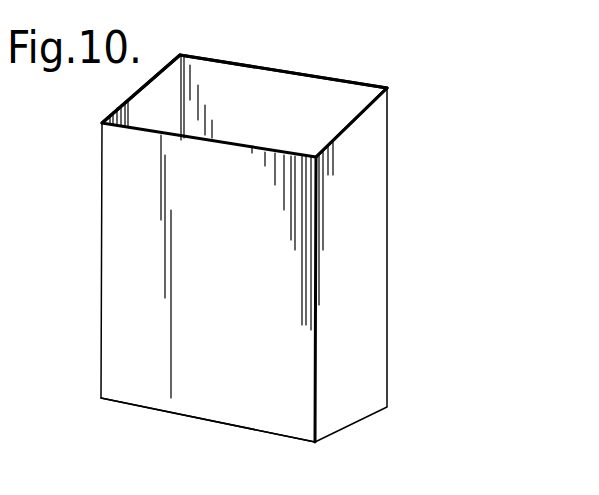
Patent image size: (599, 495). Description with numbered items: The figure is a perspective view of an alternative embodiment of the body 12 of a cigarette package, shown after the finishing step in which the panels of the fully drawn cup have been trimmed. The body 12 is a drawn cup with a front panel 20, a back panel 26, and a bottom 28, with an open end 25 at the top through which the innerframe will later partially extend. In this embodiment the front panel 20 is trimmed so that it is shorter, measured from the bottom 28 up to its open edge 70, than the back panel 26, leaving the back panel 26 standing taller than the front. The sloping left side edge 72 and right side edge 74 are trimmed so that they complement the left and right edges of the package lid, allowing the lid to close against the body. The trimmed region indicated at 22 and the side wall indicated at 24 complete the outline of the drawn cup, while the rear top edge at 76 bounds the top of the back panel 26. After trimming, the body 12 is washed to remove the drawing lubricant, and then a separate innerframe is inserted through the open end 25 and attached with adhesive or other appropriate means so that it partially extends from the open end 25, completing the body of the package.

The body 12 is at (398, 270).
The front panel 20 is at (229, 250).
The top left corner region 22 is at (145, 105).
The side wall 24 is at (363, 337).
The open end 25 is at (213, 90).
The back panel 26 is at (275, 86).
The bottom 28 is at (183, 416).
The open edge 70 is at (175, 135).
The left side edge 72 is at (160, 69).
The right side edge 74 is at (358, 118).
The rear top edge 76 is at (405, 42).